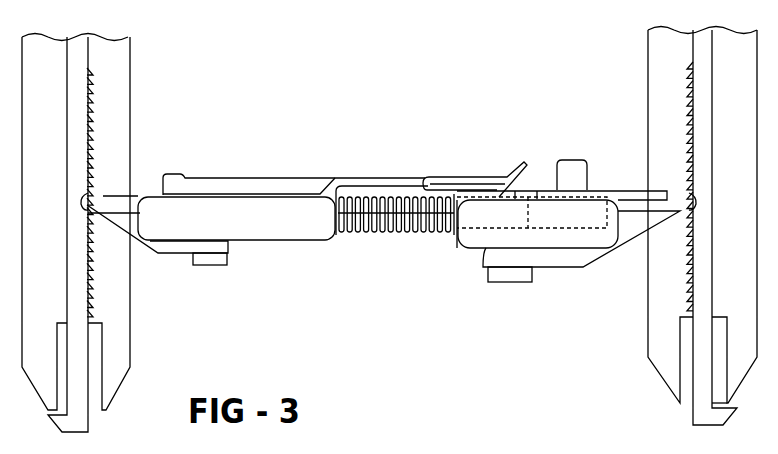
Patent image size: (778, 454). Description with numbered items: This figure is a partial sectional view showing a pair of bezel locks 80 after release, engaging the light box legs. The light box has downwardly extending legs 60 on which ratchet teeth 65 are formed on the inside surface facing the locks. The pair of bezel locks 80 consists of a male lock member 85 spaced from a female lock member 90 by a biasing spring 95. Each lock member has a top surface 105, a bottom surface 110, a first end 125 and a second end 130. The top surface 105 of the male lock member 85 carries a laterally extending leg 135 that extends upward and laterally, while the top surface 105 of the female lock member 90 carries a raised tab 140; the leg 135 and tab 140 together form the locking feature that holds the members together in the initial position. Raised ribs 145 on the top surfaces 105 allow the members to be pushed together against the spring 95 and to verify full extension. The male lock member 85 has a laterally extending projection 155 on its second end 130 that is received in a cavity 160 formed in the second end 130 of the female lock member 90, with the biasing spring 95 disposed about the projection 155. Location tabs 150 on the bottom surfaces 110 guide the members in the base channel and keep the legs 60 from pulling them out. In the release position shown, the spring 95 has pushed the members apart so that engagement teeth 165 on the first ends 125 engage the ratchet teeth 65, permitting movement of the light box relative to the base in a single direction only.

The downwardly extending legs 60 is at (40, 103).
The ratchet teeth 65 is at (88, 68).
The bezel locks 80 is at (389, 158).
The male lock member 85 is at (292, 253).
The female lock member 90 is at (456, 250).
The biasing spring 95 is at (390, 238).
The top surface 105 is at (152, 194).
The bottom surface 110 is at (258, 253).
The first end 125 is at (120, 240).
The second end 130 is at (337, 238).
The laterally extending leg 135 is at (440, 177).
The raised tab 140 is at (528, 190).
The raised ribs 145 is at (178, 177).
The location tabs 150 is at (205, 268).
The laterally extending projection 155 is at (376, 205).
The cavity 160 is at (547, 225).
The engagement teeth 165 is at (87, 197).